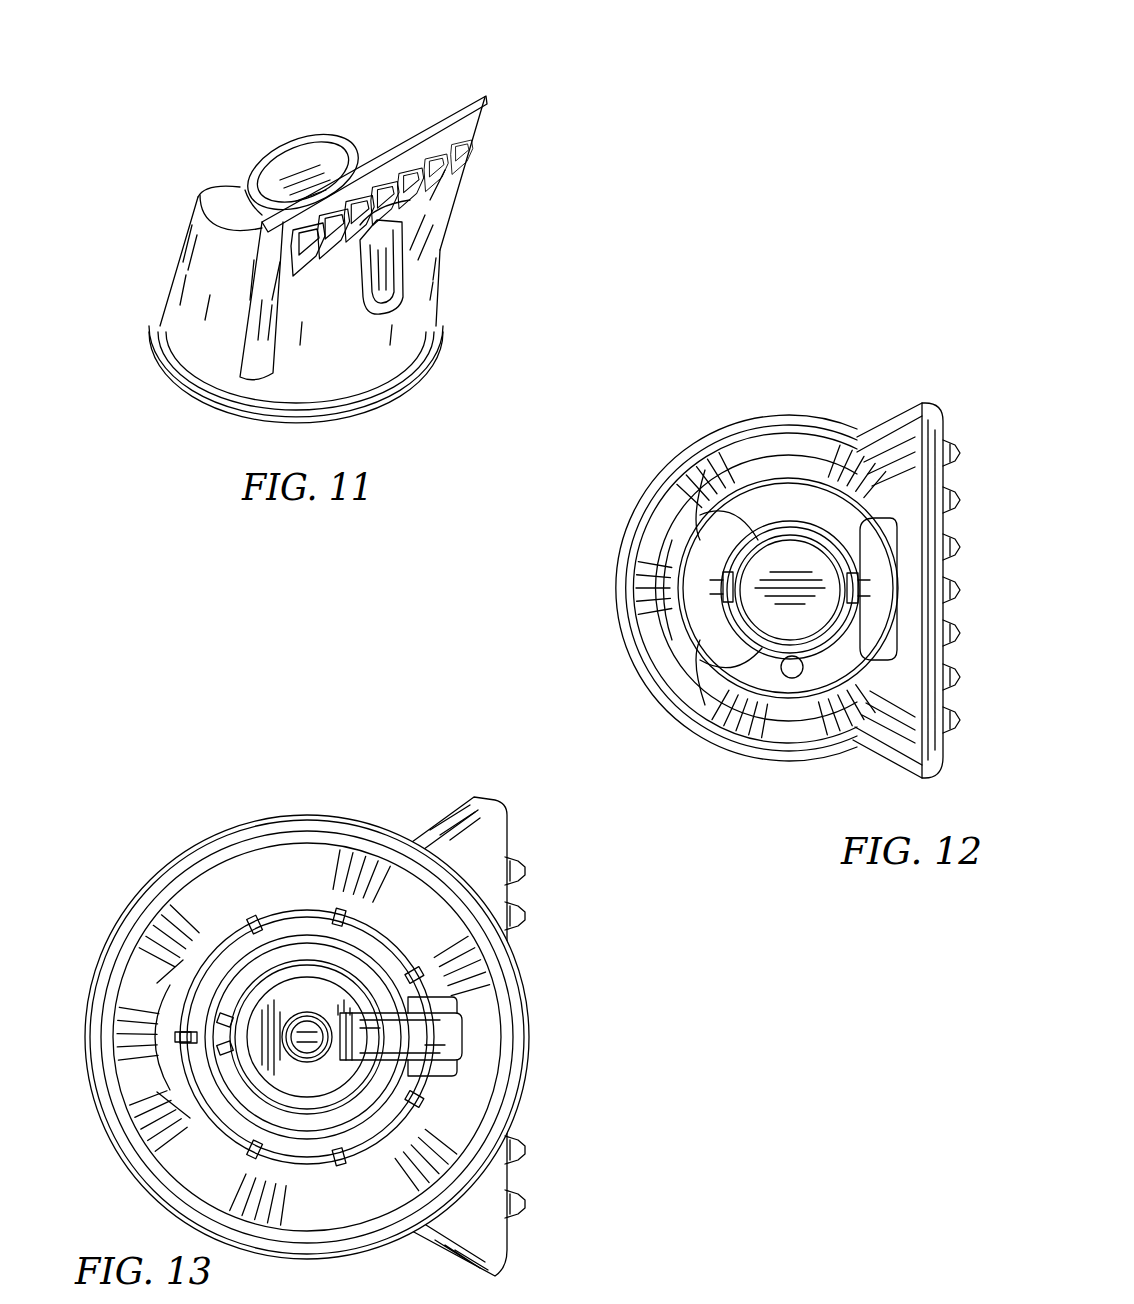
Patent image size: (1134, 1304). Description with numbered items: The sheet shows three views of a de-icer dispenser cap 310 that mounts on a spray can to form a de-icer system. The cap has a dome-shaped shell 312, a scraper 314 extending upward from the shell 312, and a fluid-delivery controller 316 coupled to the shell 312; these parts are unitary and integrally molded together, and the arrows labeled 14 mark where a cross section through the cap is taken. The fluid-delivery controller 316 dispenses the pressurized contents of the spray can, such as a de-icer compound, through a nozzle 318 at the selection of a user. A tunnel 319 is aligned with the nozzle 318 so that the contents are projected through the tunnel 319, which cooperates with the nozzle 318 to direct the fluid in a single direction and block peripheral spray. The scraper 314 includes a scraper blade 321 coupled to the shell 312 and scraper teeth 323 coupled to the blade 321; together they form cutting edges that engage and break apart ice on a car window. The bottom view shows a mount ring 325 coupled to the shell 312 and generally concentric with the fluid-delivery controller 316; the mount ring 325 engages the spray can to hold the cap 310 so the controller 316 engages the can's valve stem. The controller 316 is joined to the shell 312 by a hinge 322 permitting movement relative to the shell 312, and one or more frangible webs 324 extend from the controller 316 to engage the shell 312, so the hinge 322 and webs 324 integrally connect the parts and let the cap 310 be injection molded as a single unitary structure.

In FIG. 11, the container 14 is at (85, 258).
In FIG. 11, the de-icer dispenser cap 310 is at (150, 73).
In FIG. 11, the shell 312 is at (203, 328).
In FIG. 12, the shell 312 is at (516, 661).
In FIG. 13, the shell 312 is at (638, 908).
In FIG. 11, the scraper 314 is at (607, 95).
In FIG. 12, the scraper 314 is at (860, 449).
In FIG. 13, the scraper 314 is at (528, 1190).
In FIG. 11, the fluid-delivery controller 316 is at (367, 48).
In FIG. 12, the fluid-delivery controller 316 is at (688, 340).
In FIG. 13, the fluid-delivery controller 316 is at (330, 737).
In FIG. 11, the nozzle 318 is at (437, 243).
In FIG. 12, the nozzle 318 is at (890, 600).
In FIG. 11, the tunnel 319 is at (522, 256).
In FIG. 12, the tunnel 319 is at (866, 745).
In FIG. 12, the scraper blade 321 is at (933, 420).
In FIG. 12, the hinge 322 is at (881, 613).
In FIG. 13, the hinge 322 is at (617, 1016).
In FIG. 12, the scraper teeth 323 is at (952, 510).
In FIG. 12, the frangible webs 324 is at (506, 494).
In FIG. 13, the frangible webs 324 is at (138, 697).
In FIG. 12, the mount ring 325 is at (776, 588).
In FIG. 13, the mount ring 325 is at (670, 1070).